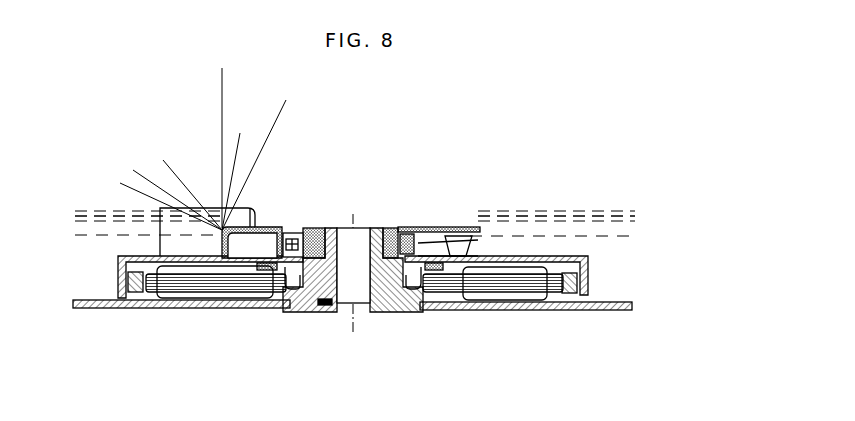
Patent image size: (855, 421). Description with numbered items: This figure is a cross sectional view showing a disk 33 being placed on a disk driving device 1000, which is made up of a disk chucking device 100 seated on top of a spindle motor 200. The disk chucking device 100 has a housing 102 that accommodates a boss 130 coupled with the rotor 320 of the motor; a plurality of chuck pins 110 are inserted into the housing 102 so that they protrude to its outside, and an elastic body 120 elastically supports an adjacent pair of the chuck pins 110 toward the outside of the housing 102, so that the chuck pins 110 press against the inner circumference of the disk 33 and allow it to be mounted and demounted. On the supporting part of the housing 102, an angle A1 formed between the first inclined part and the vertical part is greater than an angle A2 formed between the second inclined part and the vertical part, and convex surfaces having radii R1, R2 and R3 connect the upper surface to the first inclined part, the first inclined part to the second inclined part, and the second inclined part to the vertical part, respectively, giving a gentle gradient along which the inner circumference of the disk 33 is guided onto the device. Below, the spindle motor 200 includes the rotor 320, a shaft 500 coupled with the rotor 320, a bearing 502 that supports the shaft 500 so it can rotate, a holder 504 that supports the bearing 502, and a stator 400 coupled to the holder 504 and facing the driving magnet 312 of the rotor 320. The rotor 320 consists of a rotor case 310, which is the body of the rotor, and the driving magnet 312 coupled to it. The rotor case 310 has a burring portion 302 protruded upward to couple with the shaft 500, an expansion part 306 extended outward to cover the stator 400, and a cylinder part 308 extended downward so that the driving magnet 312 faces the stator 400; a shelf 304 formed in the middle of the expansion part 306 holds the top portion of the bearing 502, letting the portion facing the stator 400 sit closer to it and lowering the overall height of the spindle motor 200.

The disk chucking device 100 is at (104, 141).
The spindle motor 200 is at (85, 250).
The disk driving device 1000 is at (552, 178).
The disk 33 is at (600, 215).
The housing 102 is at (253, 228).
The boss 130 is at (312, 227).
The elastic body 120 is at (412, 237).
The chuck pin 110 is at (472, 237).
The burring portion 302 is at (398, 240).
The shelf 304 is at (460, 230).
The expansion part 306 is at (470, 242).
The cylinder part 308 is at (520, 255).
The driving magnet 312 is at (560, 265).
The rotor case 310 is at (712, 255).
The rotor 320 is at (765, 253).
The holder 504 is at (283, 305).
The bearing 502 is at (307, 305).
The shaft 500 is at (323, 300).
The stator 400 is at (507, 287).
The angle created by the first inclined part and the vertical part A1 is at (196, 102).
The angle created by the second inclined part and the vertical part A2 is at (262, 147).
The radius of convex surface between upper surface and first inclined part R1 is at (192, 188).
The radius of convex surface between first and second inclined parts R2 is at (177, 191).
The radius of convex surface between second inclined part and vertical part R3 is at (171, 200).